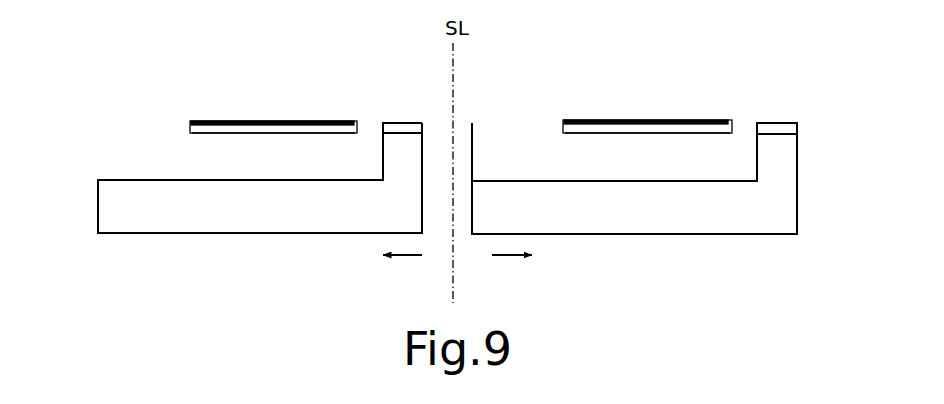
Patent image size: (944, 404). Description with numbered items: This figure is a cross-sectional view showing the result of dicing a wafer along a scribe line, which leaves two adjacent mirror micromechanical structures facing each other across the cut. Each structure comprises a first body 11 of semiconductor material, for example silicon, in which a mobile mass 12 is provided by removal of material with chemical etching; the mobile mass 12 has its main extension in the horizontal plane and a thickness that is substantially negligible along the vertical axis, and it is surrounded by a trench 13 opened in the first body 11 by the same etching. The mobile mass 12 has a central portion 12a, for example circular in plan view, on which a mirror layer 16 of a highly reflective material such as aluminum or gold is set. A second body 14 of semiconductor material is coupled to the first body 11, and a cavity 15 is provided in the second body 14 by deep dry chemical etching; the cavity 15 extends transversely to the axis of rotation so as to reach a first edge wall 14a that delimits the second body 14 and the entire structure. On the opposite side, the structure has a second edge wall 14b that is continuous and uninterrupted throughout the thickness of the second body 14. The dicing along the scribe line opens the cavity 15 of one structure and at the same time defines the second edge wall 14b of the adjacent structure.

The first body 11 is at (399, 126).
The mobile mass 12 is at (182, 127).
The central portion 12a is at (226, 134).
The trench 13 is at (380, 153).
The second body 14 is at (100, 218).
The first edge wall 14a is at (468, 228).
The second edge wall 14b is at (428, 228).
The cavity 15 is at (222, 176).
The mirror layer 16 is at (212, 121).